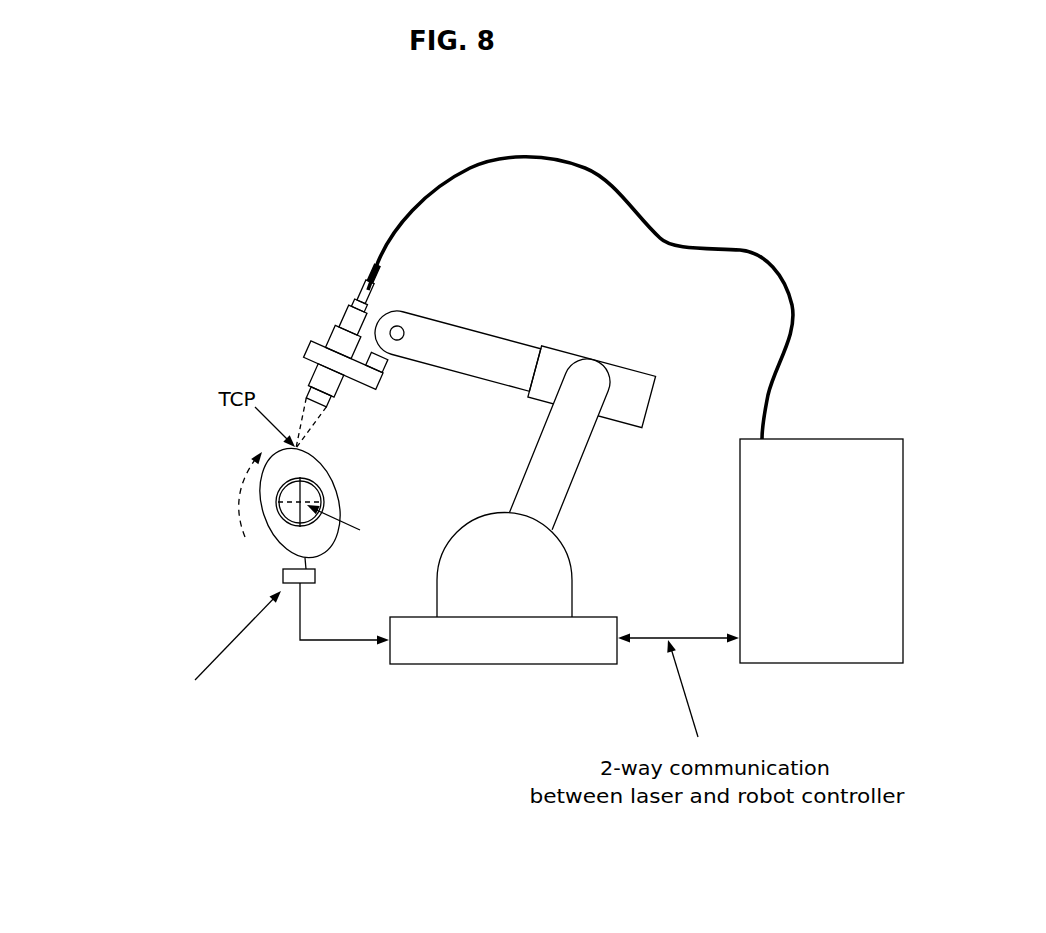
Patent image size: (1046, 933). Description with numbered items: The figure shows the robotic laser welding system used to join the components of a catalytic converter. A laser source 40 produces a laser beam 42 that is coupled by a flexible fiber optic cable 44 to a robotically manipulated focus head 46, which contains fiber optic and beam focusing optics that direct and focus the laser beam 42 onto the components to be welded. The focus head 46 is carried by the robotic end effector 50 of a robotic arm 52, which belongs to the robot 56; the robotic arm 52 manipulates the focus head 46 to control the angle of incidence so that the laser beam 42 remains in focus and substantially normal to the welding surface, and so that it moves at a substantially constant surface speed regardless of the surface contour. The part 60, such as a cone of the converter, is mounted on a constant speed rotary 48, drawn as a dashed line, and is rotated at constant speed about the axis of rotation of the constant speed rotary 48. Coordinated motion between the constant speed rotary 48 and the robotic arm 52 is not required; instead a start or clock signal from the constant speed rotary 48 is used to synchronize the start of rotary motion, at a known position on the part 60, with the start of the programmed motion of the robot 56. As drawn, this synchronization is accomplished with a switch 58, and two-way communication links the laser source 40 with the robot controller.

The laser source 40 is at (808, 613).
The laser beam 42 is at (313, 428).
The flexible fiber optic cable 44 is at (788, 288).
The focus head 46 is at (343, 320).
The constant speed rotary 48 is at (245, 537).
The robotic end effector 50 is at (362, 388).
The robotic arm 52 is at (490, 338).
The robot 56 is at (491, 654).
The switch 58 is at (316, 575).
The part 60 is at (342, 510).